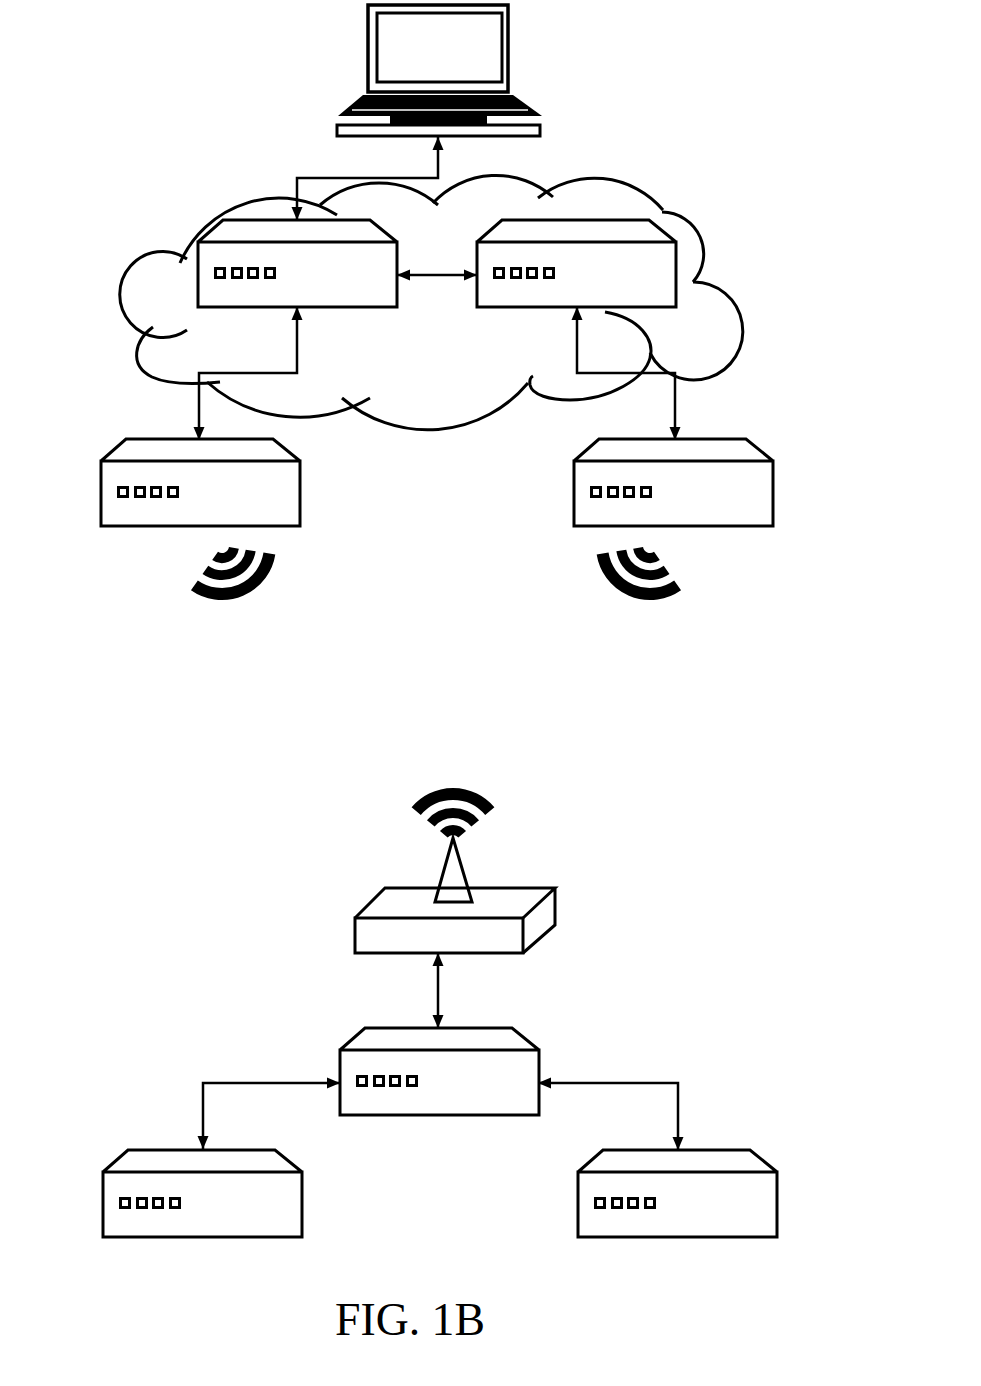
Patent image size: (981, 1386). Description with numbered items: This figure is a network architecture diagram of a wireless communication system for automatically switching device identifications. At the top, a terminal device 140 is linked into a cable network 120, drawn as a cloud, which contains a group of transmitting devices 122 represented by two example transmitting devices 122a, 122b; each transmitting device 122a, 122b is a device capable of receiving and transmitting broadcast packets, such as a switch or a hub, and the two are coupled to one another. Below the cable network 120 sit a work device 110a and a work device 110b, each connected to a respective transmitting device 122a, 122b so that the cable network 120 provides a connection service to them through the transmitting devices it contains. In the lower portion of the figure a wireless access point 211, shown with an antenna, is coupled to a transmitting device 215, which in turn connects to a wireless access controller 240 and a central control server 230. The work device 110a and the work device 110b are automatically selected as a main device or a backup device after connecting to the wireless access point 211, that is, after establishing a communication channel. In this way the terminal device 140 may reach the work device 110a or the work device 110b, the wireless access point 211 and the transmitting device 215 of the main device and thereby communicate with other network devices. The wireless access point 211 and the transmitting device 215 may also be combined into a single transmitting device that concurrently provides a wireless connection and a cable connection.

The terminal device 140 is at (510, 48).
The cable network 120 is at (427, 431).
The transmitting devices 122 is at (73, 208).
The transmitting device 122a is at (379, 300).
The transmitting device 122b is at (661, 300).
The work device 110a is at (282, 518).
The work device 110b is at (757, 518).
The wireless access point 211 is at (355, 937).
The transmitting device 215 is at (523, 1107).
The wireless access controller 240 is at (287, 1228).
The central control server 230 is at (763, 1228).